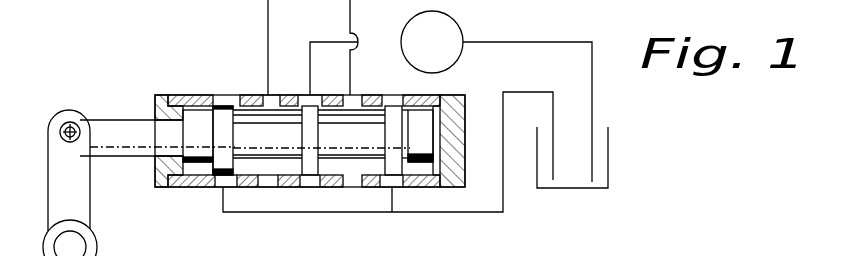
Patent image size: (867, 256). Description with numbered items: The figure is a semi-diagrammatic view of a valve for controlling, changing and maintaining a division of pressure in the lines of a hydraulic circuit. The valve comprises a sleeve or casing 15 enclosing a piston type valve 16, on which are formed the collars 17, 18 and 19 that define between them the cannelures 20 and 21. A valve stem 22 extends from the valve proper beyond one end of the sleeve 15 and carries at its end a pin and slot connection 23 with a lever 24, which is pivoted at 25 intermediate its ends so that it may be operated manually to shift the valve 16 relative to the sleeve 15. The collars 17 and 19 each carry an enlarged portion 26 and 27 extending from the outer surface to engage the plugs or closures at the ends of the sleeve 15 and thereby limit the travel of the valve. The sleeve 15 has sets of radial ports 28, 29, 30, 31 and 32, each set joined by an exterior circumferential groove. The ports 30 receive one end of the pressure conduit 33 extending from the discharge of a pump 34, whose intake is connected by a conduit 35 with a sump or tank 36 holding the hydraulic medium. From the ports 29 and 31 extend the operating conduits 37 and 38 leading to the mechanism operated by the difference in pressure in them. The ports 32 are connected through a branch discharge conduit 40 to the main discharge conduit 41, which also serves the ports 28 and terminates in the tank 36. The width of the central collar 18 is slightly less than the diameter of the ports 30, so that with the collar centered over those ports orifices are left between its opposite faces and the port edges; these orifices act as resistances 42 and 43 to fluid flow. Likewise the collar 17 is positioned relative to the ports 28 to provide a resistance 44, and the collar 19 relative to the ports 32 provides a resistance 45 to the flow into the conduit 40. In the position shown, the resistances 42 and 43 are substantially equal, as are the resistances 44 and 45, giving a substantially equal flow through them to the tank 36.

The sleeve or casing 15 is at (176, 187).
The piston type valve 16 is at (217, 143).
The collar 17 is at (221, 165).
The central collar 18 is at (303, 160).
The collar 19 is at (417, 170).
The cannelure 20 is at (212, 195).
The cannelure 21 is at (340, 167).
The valve stem 22 is at (121, 143).
The pin and slot connection 23 is at (74, 125).
The lever 24 is at (48, 193).
The pivot 25 is at (80, 250).
The enlarged portion 26 is at (195, 122).
The enlarged portion 27 is at (423, 127).
The set of radial ports 28 is at (223, 97).
The set of radial ports 29 is at (268, 100).
The set of radial ports 30 is at (303, 97).
The set of radial ports 31 is at (347, 100).
The set of radial ports 32 is at (388, 100).
The pressure line conduit 33 is at (321, 27).
The pump 34 is at (463, 32).
The conduit 35 is at (563, 43).
The sump or tank 36 is at (608, 147).
The operating conduit 37 is at (268, 22).
The operating conduit 38 is at (351, 18).
The branch discharge conduit 40 is at (390, 202).
The main discharge conduit 41 is at (503, 208).
The resistance 42 is at (297, 124).
The resistance 43 is at (320, 112).
The resistance 44 is at (233, 112).
The resistance 45 is at (384, 124).